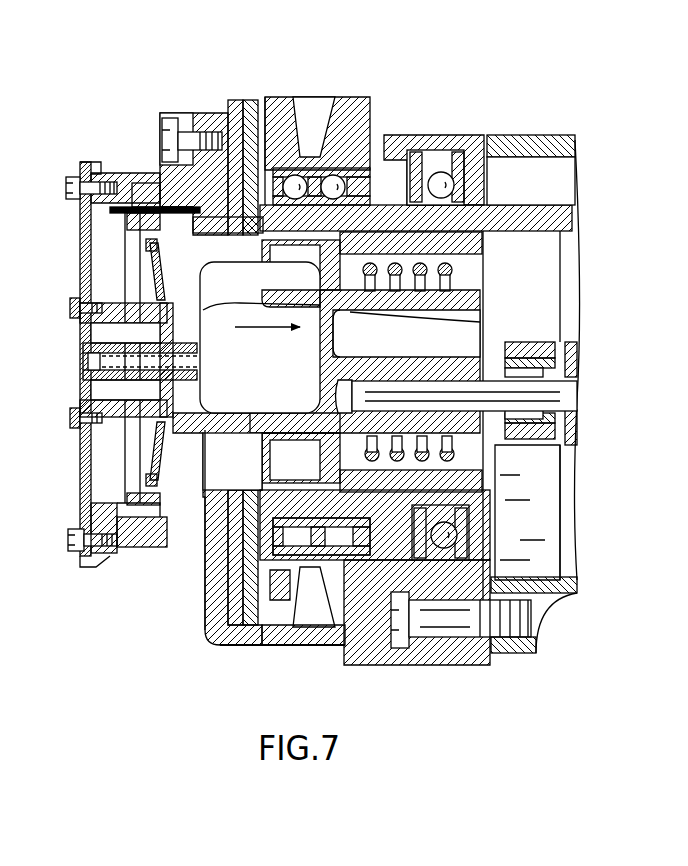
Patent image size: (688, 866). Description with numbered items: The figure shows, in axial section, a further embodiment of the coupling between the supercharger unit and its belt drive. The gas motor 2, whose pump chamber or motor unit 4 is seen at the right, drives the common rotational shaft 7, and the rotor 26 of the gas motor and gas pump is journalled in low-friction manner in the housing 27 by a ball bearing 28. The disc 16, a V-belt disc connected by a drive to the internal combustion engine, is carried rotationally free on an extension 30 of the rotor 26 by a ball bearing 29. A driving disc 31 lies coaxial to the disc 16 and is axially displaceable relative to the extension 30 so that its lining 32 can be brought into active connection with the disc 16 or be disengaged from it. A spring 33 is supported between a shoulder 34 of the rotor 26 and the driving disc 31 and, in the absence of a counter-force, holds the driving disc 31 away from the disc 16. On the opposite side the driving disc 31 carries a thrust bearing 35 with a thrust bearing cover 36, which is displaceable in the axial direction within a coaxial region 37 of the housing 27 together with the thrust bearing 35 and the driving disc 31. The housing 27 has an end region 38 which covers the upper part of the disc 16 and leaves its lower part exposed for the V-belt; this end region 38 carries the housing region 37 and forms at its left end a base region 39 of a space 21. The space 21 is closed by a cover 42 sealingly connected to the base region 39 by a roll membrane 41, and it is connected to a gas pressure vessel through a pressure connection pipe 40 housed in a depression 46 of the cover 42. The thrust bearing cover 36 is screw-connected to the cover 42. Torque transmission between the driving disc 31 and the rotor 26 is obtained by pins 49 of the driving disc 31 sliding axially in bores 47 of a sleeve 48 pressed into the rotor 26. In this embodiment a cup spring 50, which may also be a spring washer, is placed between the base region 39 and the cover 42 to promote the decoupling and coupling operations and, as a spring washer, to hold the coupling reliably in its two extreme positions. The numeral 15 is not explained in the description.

The gas motor 2 is at (575, 155).
The motor unit 4 is at (555, 565).
The rotational shaft 7 is at (555, 395).
The housing 15 is at (212, 646).
The disc 16 is at (292, 166).
The space 21 is at (269, 399).
The rotor 26 is at (560, 218).
The housing 27 is at (405, 140).
The ball bearing 28 is at (442, 185).
The ball bearing 29 is at (327, 165).
The extension 30 is at (275, 120).
The driving disc 31 is at (232, 100).
The lining 32 is at (248, 100).
The spring 33 is at (440, 270).
The shoulder 34 is at (483, 246).
The thrust bearing 35 is at (255, 490).
The thrust bearing cover 36 is at (207, 120).
The coaxial region 37 is at (410, 298).
The end region 38 is at (215, 597).
The base region 39 is at (170, 346).
The pressure connection pipe 40 is at (90, 378).
The roll membrane 41 is at (118, 500).
The cover 42 is at (80, 228).
The depression 46 is at (110, 393).
The bores 47 is at (295, 600).
The sleeve 48 is at (335, 600).
The pins 49 is at (265, 612).
The cup spring 50 is at (150, 285).